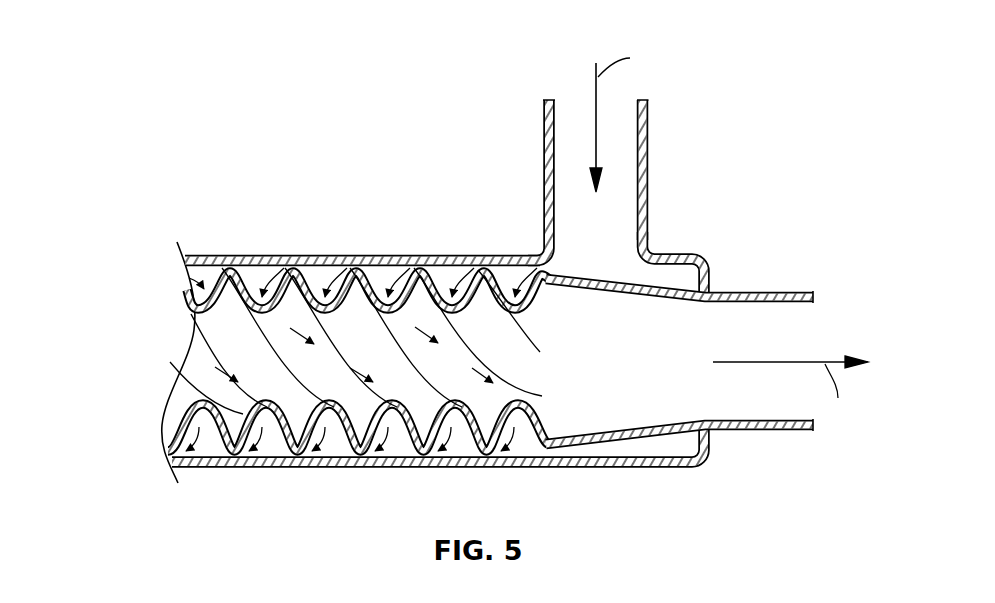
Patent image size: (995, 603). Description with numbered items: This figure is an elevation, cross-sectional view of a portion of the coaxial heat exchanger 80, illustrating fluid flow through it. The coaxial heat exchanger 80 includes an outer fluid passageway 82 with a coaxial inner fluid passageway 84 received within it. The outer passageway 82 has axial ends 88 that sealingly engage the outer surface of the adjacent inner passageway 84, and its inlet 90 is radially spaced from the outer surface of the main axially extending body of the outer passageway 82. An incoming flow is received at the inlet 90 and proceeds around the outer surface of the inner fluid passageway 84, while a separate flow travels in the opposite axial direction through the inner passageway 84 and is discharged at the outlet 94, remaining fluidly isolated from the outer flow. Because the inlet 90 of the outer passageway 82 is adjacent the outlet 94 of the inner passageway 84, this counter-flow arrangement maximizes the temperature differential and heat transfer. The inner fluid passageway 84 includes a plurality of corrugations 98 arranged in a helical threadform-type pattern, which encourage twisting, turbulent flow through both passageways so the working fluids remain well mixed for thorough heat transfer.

The coaxial heat exchanger 80 is at (452, 288).
The outer fluid passageway 82 is at (229, 248).
The inner fluid passageway 84 is at (421, 262).
The axial ends 88 is at (713, 280).
The inlet 90 is at (649, 126).
The outlet 94 is at (764, 432).
The corrugations 98 is at (290, 268).